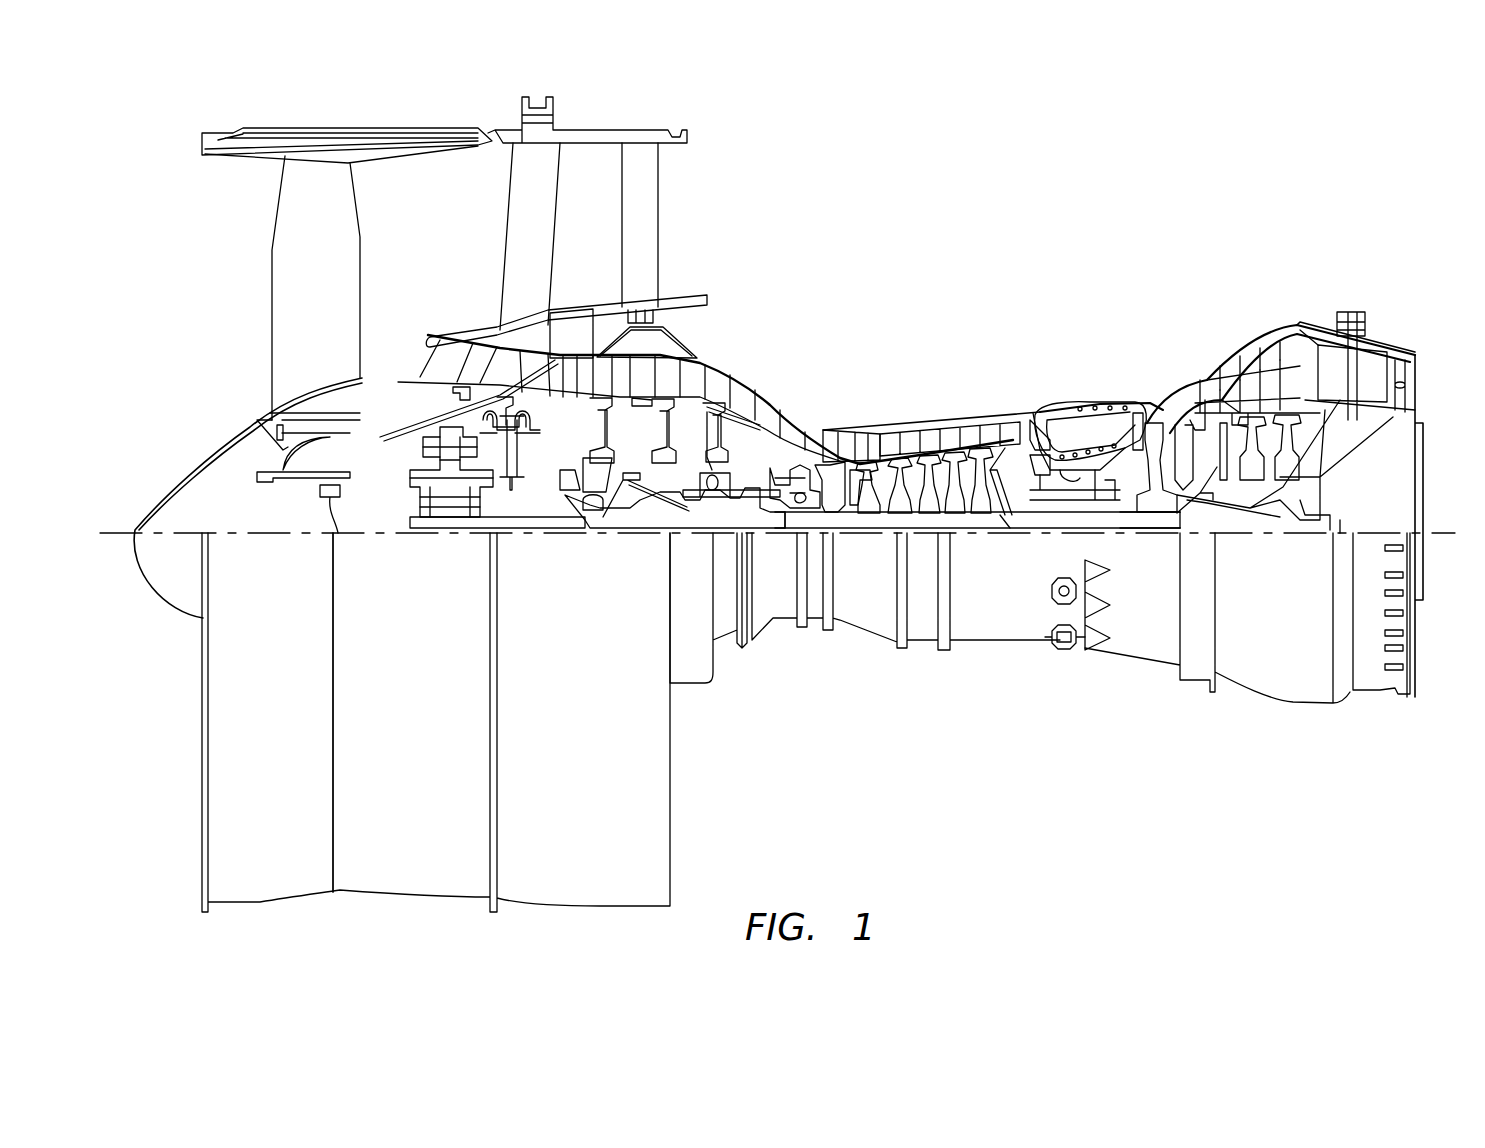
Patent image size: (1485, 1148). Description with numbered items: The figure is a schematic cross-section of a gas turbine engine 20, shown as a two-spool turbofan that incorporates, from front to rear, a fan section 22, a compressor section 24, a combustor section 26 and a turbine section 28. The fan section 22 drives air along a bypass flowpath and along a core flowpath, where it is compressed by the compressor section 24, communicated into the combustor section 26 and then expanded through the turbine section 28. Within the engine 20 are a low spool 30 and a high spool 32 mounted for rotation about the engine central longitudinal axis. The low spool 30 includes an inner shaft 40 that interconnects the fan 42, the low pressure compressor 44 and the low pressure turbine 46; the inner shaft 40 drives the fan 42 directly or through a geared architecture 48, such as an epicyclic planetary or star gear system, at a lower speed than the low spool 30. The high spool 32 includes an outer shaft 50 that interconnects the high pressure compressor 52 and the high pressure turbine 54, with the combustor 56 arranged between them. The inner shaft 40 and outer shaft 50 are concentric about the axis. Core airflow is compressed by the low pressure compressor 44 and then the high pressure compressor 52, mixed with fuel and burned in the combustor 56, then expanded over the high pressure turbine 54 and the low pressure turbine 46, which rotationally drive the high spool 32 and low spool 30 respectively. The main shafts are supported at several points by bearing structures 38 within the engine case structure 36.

The gas turbine engine 20 is at (1140, 184).
The fan section 22 is at (200, 120).
The compressor section 24 is at (500, 282).
The combustor section 26 is at (1092, 276).
The turbine section 28 is at (1350, 276).
The low spool 30 is at (756, 485).
The high spool 32 is at (992, 478).
The engine case structure 36 is at (922, 650).
The bearing structures 38 is at (530, 606).
The inner shaft 40 is at (1118, 528).
The fan 42 is at (303, 340).
The low pressure compressor 44 is at (692, 372).
The low pressure turbine 46 is at (1266, 360).
The geared architecture 48 is at (457, 483).
The outer shaft 50 is at (1172, 500).
The high pressure compressor 52 is at (845, 432).
The high pressure turbine 54 is at (1153, 425).
The combustor 56 is at (1091, 430).